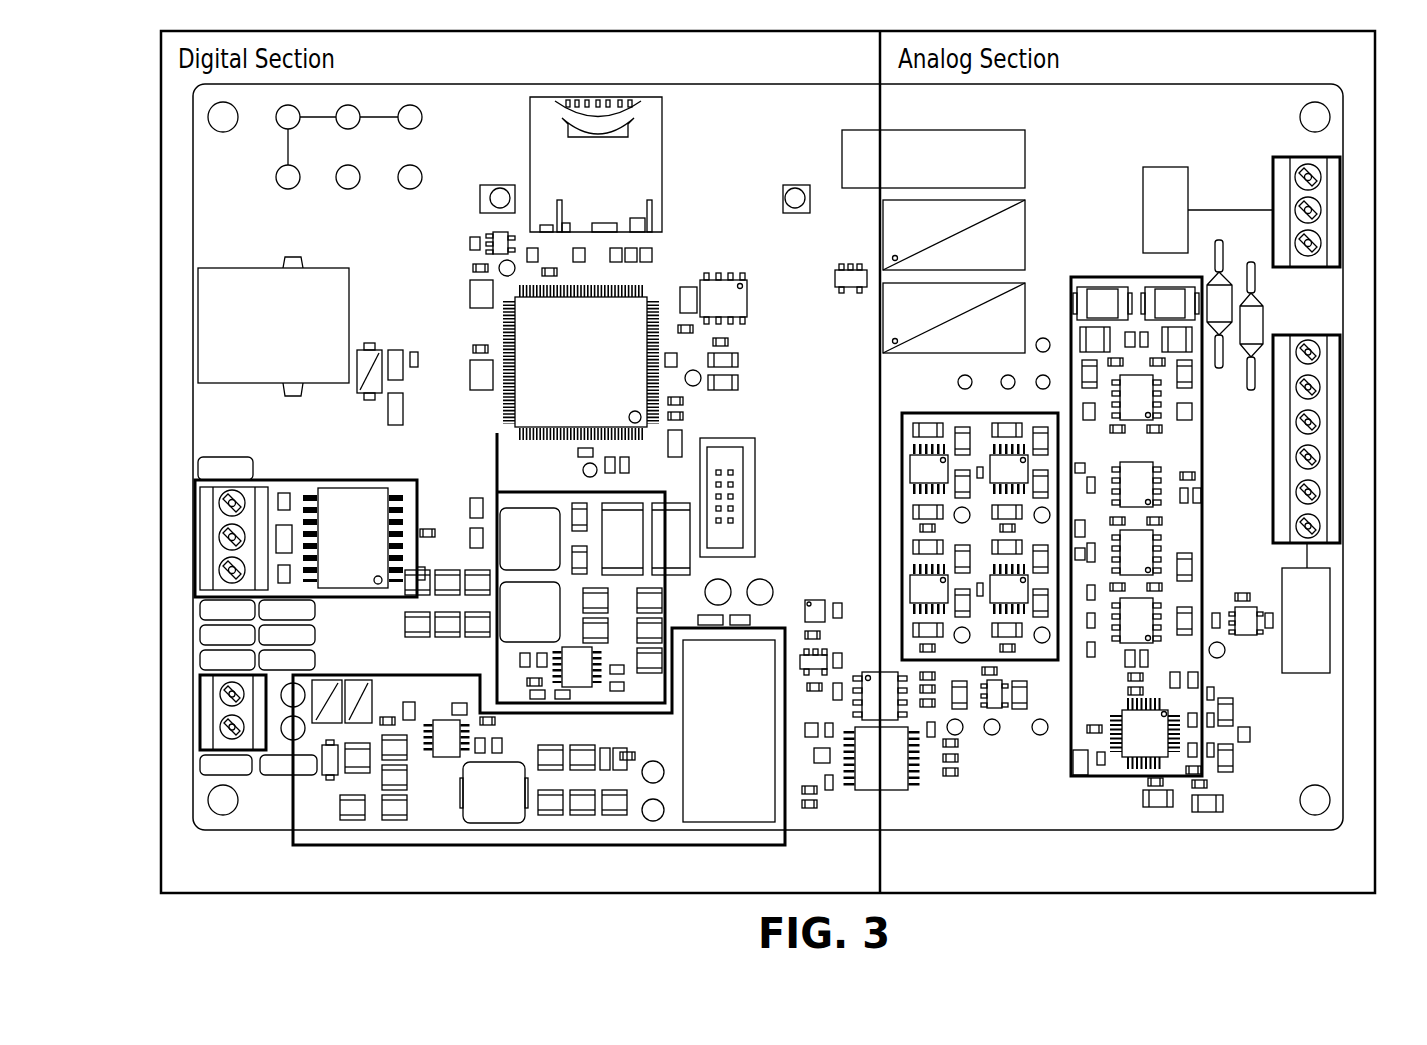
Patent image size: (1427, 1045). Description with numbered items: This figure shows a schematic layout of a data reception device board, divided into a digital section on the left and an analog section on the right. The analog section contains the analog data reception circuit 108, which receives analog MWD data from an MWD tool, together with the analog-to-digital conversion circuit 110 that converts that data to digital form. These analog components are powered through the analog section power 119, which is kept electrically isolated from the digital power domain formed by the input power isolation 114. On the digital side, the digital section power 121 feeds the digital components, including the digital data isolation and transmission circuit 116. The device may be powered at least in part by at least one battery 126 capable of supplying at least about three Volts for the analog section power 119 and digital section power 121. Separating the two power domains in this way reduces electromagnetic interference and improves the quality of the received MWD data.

The analog data reception circuit 108 is at (1340, 542).
The analog-to-digital conversion circuit 110 is at (1202, 776).
The input power isolation 114 is at (293, 845).
The digital data isolation and transmission circuit 116 is at (195, 597).
The analog section power 119 is at (1057, 660).
The digital section power 121 is at (497, 433).
The battery 126 is at (1340, 263).